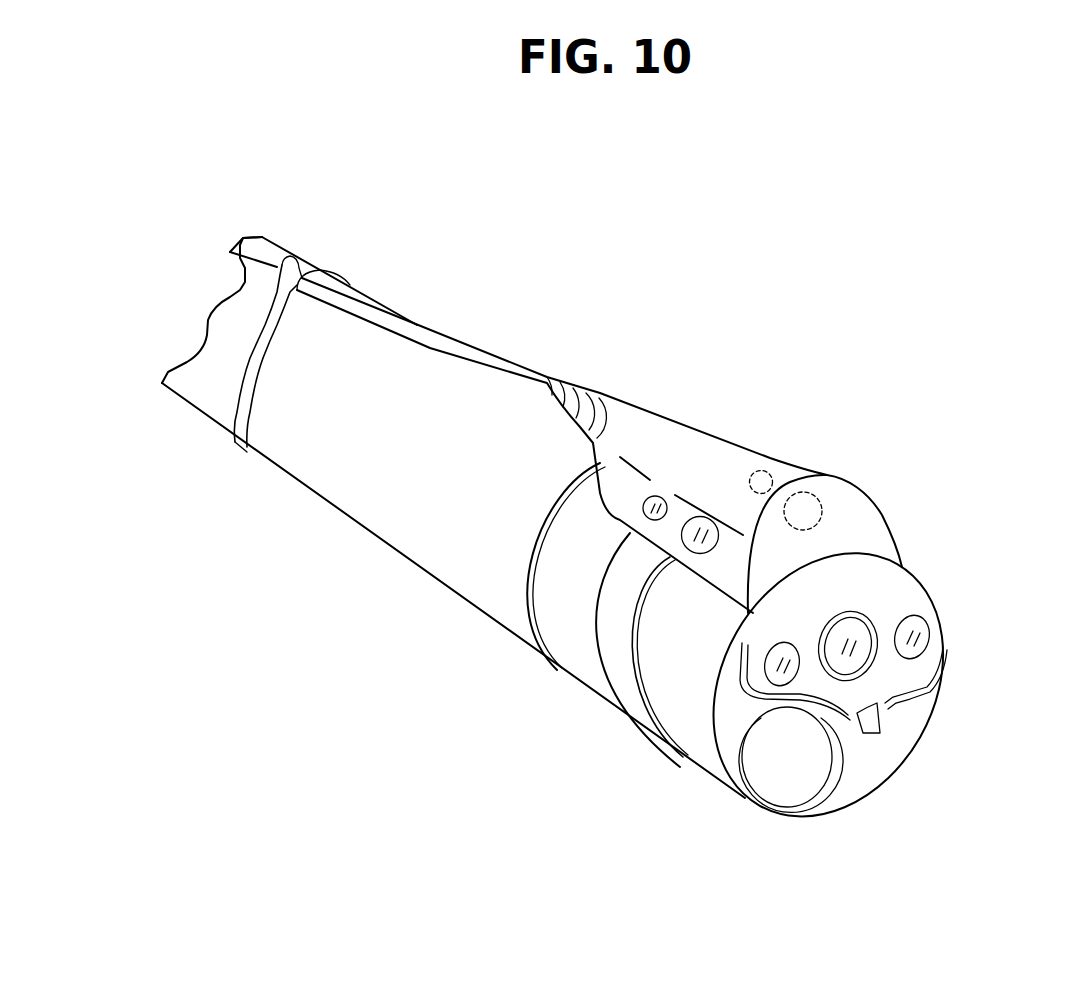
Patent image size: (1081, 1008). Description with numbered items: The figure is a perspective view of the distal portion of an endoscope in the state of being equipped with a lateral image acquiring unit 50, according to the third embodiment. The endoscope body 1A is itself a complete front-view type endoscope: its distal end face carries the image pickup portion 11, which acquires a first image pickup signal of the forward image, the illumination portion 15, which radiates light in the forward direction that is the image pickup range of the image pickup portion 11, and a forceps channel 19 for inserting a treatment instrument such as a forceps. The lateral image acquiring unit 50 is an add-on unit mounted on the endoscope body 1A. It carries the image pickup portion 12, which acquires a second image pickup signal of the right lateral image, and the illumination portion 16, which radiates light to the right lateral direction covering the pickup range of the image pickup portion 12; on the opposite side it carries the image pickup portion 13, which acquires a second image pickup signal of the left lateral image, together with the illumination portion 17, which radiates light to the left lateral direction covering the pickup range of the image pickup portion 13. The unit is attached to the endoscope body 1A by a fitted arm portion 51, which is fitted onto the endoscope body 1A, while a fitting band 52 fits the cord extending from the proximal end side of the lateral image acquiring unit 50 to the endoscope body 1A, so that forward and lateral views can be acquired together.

The endoscope body 1A is at (453, 540).
The image pickup portion 11 is at (853, 637).
The image pickup portion 12 is at (702, 515).
The image pickup portion 13 is at (815, 490).
The illumination portion 15 is at (785, 650).
The illumination portion 16 is at (655, 495).
The illumination portion 17 is at (763, 470).
The forceps channel 19 is at (782, 778).
The lateral image acquiring unit 50 is at (630, 425).
The fitted arm portion 51 is at (613, 663).
The fitting band 52 is at (230, 383).